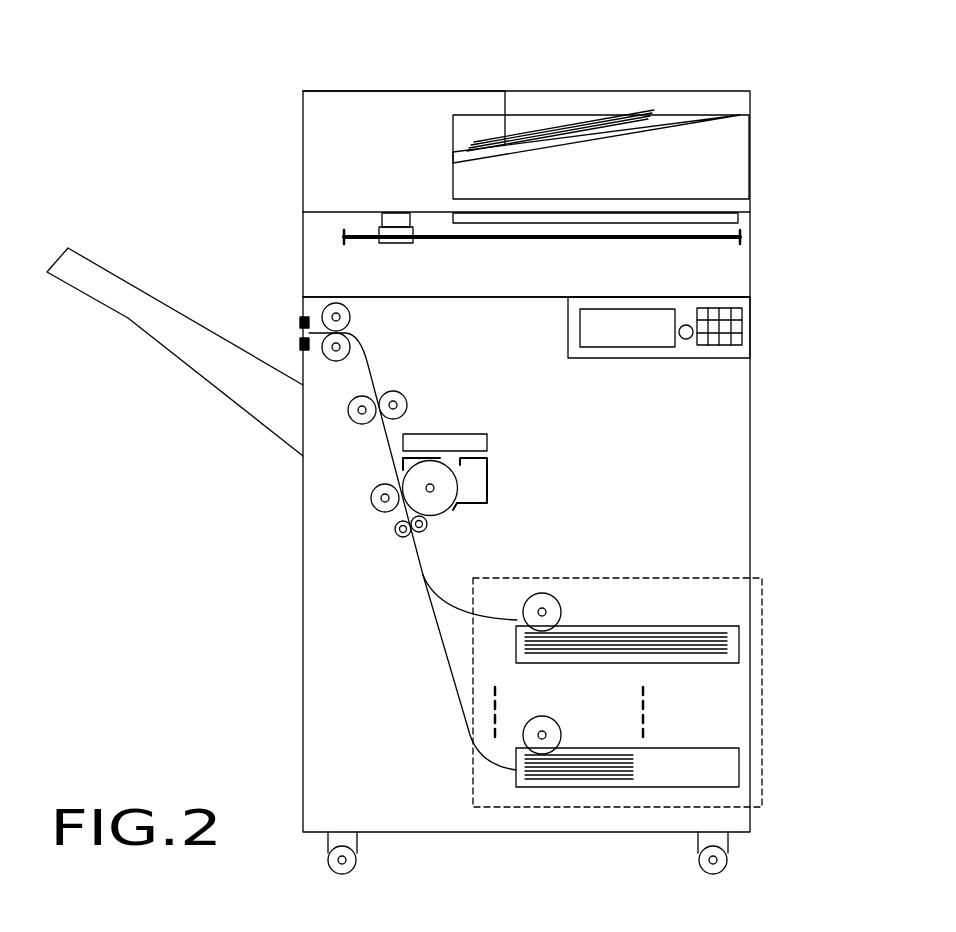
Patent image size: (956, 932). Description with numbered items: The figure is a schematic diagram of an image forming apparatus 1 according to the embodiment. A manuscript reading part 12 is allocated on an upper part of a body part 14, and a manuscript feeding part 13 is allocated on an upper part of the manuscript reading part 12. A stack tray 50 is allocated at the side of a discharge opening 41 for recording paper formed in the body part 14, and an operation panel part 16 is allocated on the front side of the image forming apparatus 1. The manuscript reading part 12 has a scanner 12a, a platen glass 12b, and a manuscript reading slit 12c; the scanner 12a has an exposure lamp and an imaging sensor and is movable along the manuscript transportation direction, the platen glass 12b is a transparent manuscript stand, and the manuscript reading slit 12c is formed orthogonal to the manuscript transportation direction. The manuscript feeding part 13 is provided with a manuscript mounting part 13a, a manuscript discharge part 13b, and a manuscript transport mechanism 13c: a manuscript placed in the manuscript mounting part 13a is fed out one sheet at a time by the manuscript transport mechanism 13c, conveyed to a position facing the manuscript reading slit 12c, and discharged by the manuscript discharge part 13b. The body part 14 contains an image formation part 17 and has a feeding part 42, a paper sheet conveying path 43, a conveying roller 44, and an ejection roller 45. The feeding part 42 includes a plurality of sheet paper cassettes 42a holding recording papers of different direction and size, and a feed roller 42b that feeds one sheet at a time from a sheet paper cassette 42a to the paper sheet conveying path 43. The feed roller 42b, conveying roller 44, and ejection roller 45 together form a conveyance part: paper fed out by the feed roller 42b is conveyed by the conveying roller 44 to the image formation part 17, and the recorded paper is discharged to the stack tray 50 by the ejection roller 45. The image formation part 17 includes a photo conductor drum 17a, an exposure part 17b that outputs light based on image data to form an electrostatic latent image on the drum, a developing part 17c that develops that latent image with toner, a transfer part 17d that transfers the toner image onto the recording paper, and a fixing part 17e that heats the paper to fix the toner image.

The image forming apparatus 1 is at (242, 122).
The manuscript reading part 12 is at (303, 245).
The scanner 12a is at (400, 244).
The platen glass 12b is at (738, 221).
The manuscript reading slit 12c is at (400, 217).
The manuscript feeding part 13 is at (303, 150).
The manuscript mounting part 13a is at (657, 130).
The manuscript discharge part 13b is at (627, 197).
The manuscript transport mechanism 13c is at (405, 95).
The body part 14 is at (752, 540).
The operation panel part 16 is at (747, 343).
The image formation part 17 is at (572, 457).
The photo conductor drum 17a is at (440, 515).
The exposure part 17b is at (488, 442).
The developing part 17c is at (488, 472).
The transfer part 17d is at (372, 497).
The fixing part 17e is at (408, 400).
The discharge opening 41 is at (300, 328).
The feeding part 42 is at (765, 627).
The sheet paper cassette 42a is at (673, 625).
The feed roller 42b is at (562, 615).
The paper sheet conveying path 43 is at (408, 543).
The conveying roller 44 is at (397, 527).
The ejection roller 45 is at (352, 315).
The stack tray 50 is at (200, 375).